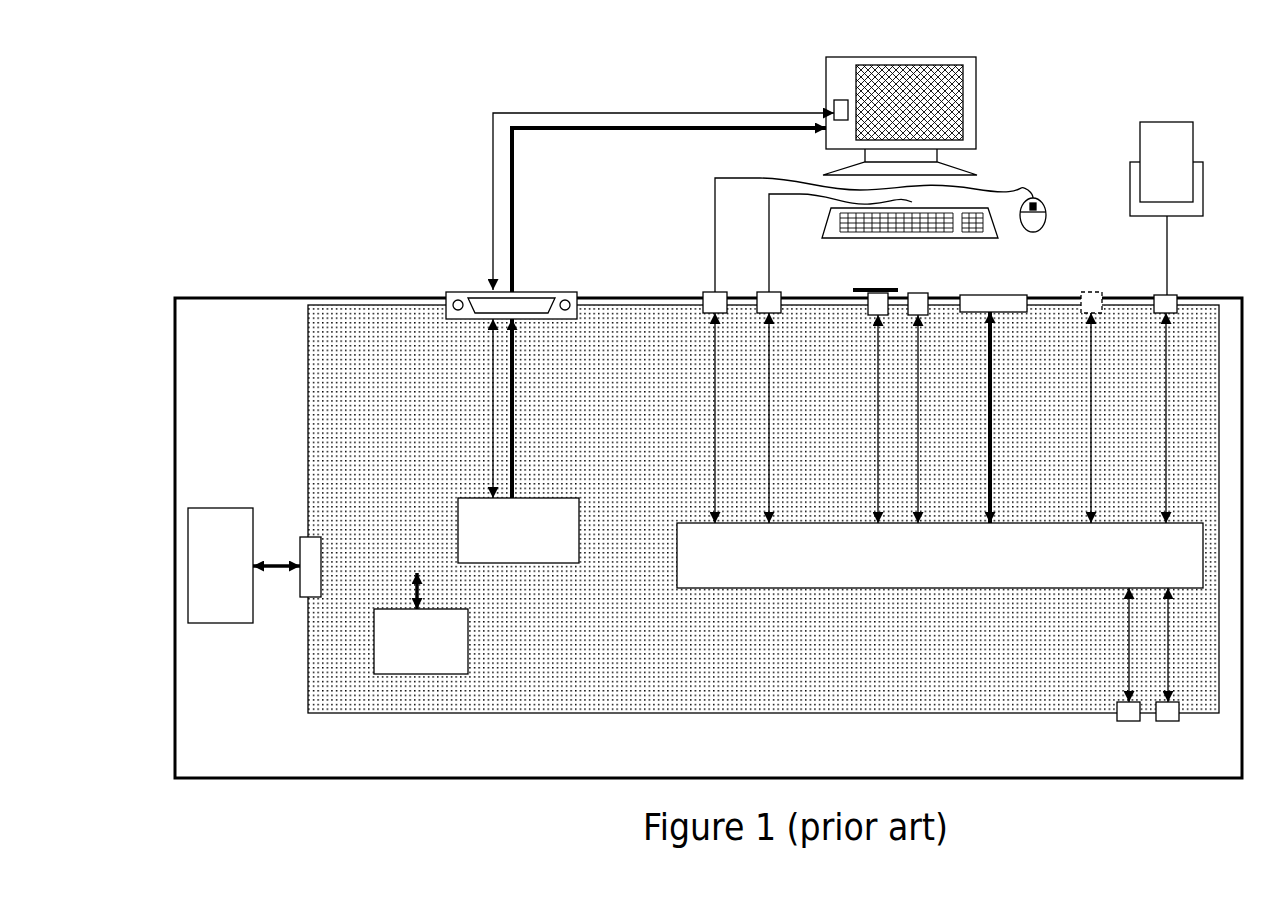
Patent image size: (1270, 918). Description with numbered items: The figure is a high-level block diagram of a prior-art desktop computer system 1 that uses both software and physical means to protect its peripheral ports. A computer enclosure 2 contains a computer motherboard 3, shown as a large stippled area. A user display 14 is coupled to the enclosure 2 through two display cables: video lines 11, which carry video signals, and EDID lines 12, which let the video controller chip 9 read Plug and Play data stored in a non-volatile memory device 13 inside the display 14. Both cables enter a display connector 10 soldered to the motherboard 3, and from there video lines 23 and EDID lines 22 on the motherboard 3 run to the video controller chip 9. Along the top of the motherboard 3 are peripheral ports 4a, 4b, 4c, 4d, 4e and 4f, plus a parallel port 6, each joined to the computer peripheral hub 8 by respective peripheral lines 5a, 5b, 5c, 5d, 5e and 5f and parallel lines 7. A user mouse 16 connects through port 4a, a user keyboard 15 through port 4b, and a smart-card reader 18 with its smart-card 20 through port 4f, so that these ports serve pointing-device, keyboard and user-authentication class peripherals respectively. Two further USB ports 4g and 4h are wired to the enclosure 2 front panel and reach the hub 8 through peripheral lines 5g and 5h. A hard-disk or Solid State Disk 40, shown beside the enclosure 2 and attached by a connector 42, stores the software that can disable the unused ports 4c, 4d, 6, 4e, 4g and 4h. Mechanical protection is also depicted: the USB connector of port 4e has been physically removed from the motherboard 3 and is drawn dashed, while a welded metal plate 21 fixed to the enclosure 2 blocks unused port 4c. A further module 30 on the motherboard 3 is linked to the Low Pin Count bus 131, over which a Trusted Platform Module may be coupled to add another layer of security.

The desktop computer system 1 is at (300, 112).
The computer enclosure 2 is at (270, 298).
The computer motherboard 3 is at (308, 392).
The peripheral port 4a is at (705, 292).
The peripheral port 4b is at (779, 292).
The peripheral port 4c is at (871, 312).
The peripheral port 4d is at (926, 293).
The peripheral port 4e is at (1096, 292).
The peripheral port 4f is at (1180, 295).
The USB port 4g is at (1128, 721).
The USB port 4h is at (1167, 721).
The peripheral line 5a is at (713, 386).
The peripheral line 5b is at (771, 389).
The peripheral line 5c is at (876, 380).
The peripheral line 5d is at (920, 386).
The peripheral line 5e is at (1094, 385).
The peripheral line 5f is at (1169, 385).
The peripheral line 5g is at (1127, 656).
The peripheral line 5h is at (1171, 658).
The parallel port 6 is at (983, 295).
The parallel lines 7 is at (993, 384).
The computer peripheral hub 8 is at (677, 540).
The video controller chip 9 is at (580, 520).
The display connector 10 is at (446, 296).
The video lines 11 is at (596, 130).
The EDID lines 12 is at (522, 113).
The non-volatile memory device 13 is at (832, 103).
The user display 14 is at (977, 70).
The user keyboard 15 is at (830, 219).
The user mouse 16 is at (1045, 220).
The smart-card reader 18 is at (1130, 172).
The smart-card 20 is at (1140, 145).
The welded metal plate 21 is at (868, 288).
The EDID lines 22 is at (492, 418).
The video lines 23 is at (514, 418).
The component 30 is at (374, 638).
The hard-disk or Solid State Disk 40 is at (218, 508).
The connector 42 is at (276, 570).
The Low Pin Count bus 131 is at (413, 589).